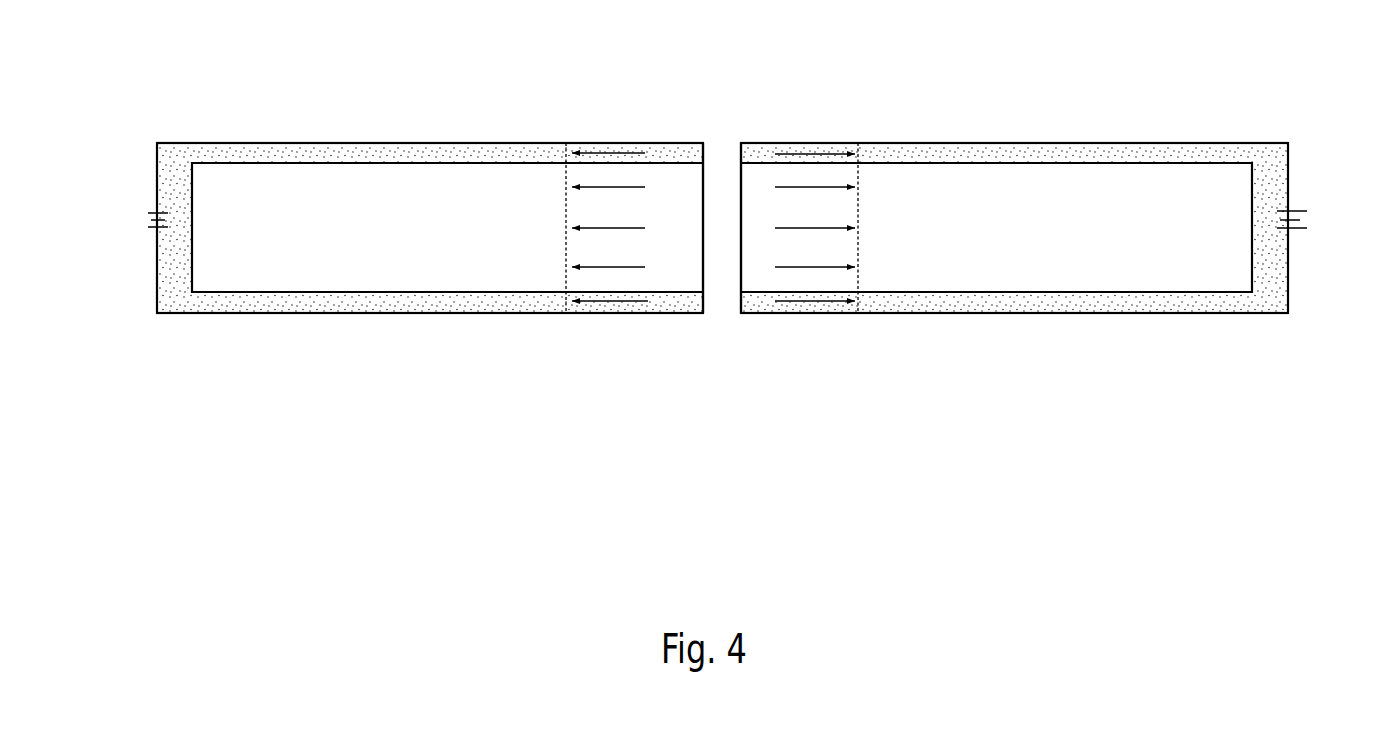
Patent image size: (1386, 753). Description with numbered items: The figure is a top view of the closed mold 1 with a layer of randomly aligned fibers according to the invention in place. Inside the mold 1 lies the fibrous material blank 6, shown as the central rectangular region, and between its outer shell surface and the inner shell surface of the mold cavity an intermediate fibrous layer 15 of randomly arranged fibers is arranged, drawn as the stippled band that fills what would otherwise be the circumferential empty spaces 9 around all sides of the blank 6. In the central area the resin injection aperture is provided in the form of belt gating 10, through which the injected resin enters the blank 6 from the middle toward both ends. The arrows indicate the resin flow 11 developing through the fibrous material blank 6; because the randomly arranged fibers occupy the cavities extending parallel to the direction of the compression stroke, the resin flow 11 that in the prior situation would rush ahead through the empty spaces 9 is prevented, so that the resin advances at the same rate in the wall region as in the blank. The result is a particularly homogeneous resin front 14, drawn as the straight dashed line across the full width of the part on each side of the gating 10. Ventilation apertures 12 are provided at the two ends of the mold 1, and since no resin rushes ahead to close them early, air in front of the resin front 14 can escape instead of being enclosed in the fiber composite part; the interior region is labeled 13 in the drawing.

The mold 1 is at (284, 104).
The fibrous material blank 6 is at (415, 208).
The empty spaces 9 is at (170, 235).
The belt gating 10 is at (717, 173).
The resin flow 11 is at (435, 312).
The ventilation apertures 12 is at (142, 218).
The interior 13 is at (268, 237).
The resin front 14 is at (565, 217).
The intermediate fibrous layer 15 is at (392, 300).